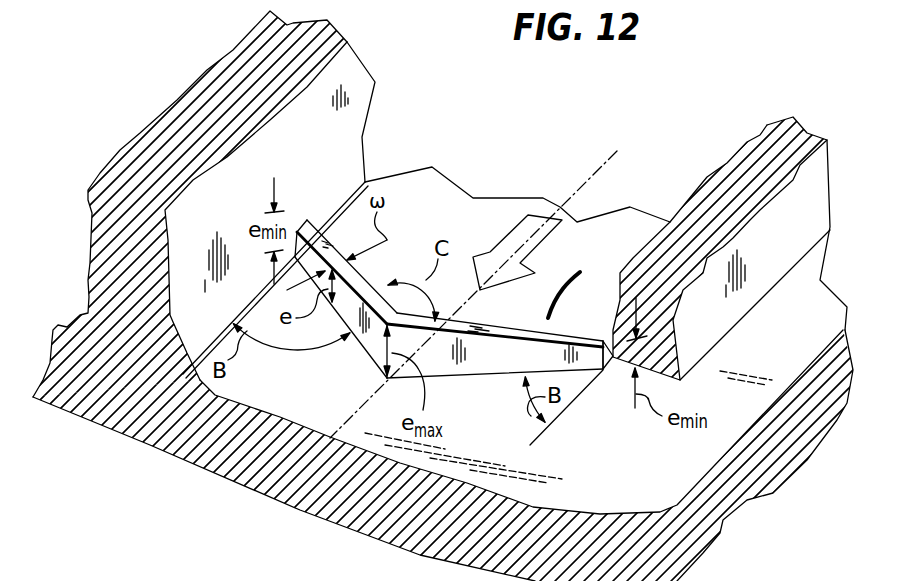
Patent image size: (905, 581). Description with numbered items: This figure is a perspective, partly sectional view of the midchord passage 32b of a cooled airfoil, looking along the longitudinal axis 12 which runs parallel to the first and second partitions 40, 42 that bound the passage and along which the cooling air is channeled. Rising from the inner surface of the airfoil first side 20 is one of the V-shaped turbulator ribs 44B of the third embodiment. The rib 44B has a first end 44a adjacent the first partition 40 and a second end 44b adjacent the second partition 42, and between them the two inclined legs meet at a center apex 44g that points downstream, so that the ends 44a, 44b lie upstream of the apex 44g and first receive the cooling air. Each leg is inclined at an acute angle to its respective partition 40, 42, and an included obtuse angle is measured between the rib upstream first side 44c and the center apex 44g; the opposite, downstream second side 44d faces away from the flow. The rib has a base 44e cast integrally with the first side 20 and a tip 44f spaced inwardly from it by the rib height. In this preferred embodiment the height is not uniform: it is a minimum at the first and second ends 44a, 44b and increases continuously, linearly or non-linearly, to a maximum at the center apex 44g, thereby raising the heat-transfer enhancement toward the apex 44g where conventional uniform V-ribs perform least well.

The longitudinal axis 12 is at (600, 168).
The airfoil first side 20 is at (320, 511).
The midchord passage 32b is at (279, 381).
The first partition 40 is at (192, 103).
The second partition 42 is at (760, 150).
The rib first end 44a is at (353, 270).
The rib second end 44b is at (610, 364).
The rib upstream first side 44c is at (567, 339).
The rib downstream second side 44d is at (509, 372).
The rib base 44e is at (373, 366).
The rib tip 44f is at (497, 316).
The center apex 44g is at (367, 291).
The V-shaped turbulator rib 44B is at (574, 282).